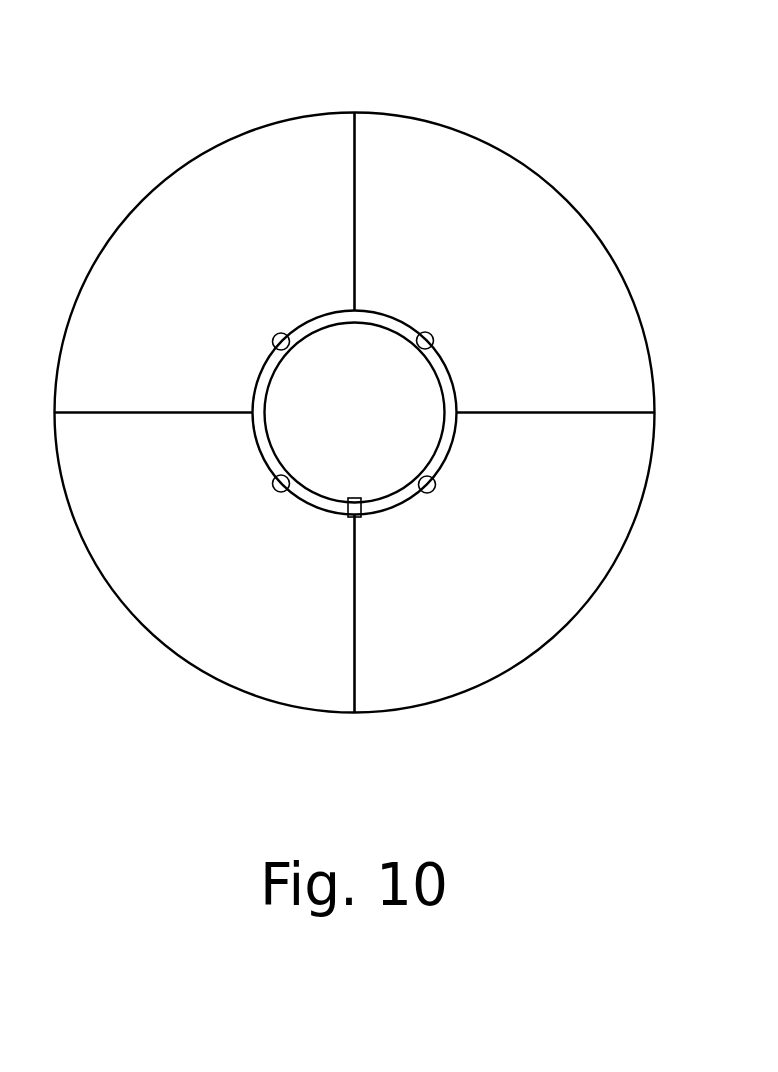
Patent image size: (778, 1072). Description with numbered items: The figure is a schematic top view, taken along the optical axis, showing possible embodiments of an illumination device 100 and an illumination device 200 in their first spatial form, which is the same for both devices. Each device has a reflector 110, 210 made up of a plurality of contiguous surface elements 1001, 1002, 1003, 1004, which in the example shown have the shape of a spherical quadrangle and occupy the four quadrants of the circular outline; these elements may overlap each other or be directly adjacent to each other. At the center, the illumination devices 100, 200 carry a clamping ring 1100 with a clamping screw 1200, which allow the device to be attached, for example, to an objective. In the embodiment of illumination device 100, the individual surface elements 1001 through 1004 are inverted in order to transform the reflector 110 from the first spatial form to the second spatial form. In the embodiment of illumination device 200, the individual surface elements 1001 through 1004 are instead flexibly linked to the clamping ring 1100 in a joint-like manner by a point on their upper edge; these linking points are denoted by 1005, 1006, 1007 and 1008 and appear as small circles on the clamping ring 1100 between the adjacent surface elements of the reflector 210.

The illumination device 100 is at (355, 361).
The illumination device 200 is at (145, 100).
The reflector 110 is at (355, 411).
The reflector 210 is at (567, 143).
The surface element 1001 is at (548, 289).
The surface element 1002 is at (542, 592).
The surface element 1003 is at (252, 584).
The surface element 1004 is at (268, 279).
The linking point 1005 is at (432, 338).
The linking point 1006 is at (434, 487).
The linking point 1007 is at (272, 485).
The linking point 1008 is at (272, 343).
The clamping ring 1100 is at (265, 443).
The clamping screw 1200 is at (349, 498).